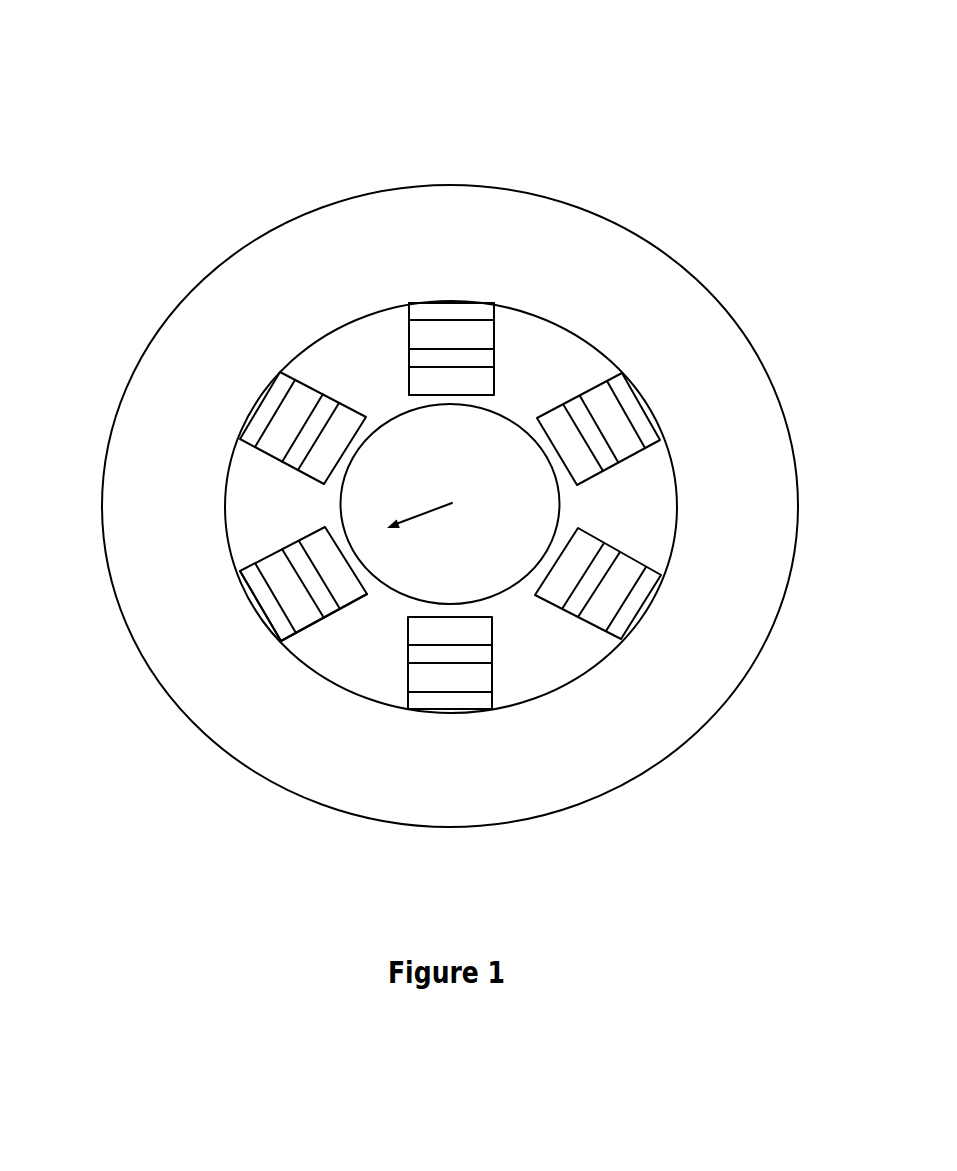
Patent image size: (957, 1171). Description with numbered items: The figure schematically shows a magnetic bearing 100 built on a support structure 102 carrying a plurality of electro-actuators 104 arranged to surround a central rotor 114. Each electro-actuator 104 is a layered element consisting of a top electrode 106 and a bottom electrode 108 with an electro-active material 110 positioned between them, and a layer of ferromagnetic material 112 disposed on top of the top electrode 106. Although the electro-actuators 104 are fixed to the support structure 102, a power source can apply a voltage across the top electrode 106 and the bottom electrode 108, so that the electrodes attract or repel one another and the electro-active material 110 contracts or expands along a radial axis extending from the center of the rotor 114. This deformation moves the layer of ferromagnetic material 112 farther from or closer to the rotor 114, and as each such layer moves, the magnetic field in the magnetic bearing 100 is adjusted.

The magnetic bearing 100 is at (703, 56).
The support structure 102 is at (767, 367).
The electro-actuator 104 is at (410, 258).
The top electrode 106 is at (495, 352).
The bottom electrode 108 is at (453, 300).
The electro-active material 110 is at (409, 333).
The layer of ferromagnetic material 112 is at (452, 397).
The rotor 114 is at (560, 505).